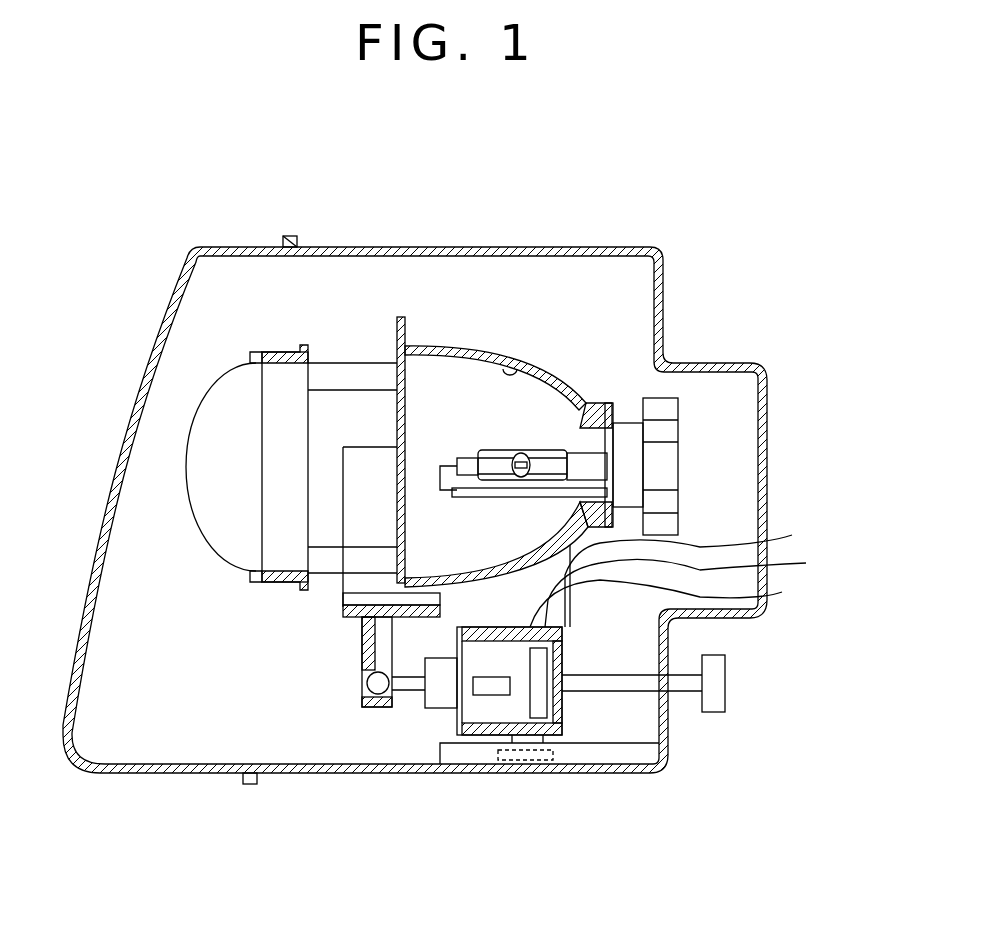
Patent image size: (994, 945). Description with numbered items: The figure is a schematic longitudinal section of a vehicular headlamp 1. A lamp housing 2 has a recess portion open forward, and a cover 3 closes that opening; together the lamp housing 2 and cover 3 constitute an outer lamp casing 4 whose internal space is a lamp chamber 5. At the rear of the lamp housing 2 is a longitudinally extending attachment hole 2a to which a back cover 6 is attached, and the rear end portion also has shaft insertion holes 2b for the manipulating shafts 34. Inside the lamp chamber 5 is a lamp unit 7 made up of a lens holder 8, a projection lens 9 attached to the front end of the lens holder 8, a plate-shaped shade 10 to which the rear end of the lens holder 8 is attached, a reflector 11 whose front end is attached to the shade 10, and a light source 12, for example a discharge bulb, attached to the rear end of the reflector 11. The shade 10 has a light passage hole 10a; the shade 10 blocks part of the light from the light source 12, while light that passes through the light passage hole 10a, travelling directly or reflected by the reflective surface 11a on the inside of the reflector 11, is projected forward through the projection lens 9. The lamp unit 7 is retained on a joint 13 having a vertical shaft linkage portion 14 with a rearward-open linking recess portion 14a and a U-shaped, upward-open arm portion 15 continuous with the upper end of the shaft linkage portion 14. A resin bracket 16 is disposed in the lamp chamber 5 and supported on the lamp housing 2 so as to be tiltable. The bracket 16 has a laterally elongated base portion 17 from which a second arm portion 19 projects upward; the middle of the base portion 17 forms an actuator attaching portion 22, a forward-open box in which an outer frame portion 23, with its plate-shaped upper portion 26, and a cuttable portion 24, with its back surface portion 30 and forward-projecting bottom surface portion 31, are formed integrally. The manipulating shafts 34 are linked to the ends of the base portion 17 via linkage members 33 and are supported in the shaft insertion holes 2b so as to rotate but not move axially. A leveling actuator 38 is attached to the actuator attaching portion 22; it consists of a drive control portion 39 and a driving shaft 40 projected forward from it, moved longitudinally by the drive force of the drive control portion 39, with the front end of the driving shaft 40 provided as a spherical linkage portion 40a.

The vehicular headlamp 1 is at (105, 246).
The lamp housing 2 is at (327, 247).
The attachment hole 2a is at (733, 365).
The shaft insertion hole 2b is at (668, 677).
The cover 3 is at (231, 247).
The outer lamp casing 4 is at (313, 168).
The lamp chamber 5 is at (160, 712).
The back cover 6 is at (770, 617).
The lamp unit 7 is at (465, 346).
The lens holder 8 is at (330, 363).
The projection lens 9 is at (203, 420).
The shade 10 is at (402, 320).
The light passage hole 10a is at (405, 402).
The reflector 11 is at (495, 366).
The reflective surface 11a is at (512, 366).
The light source 12 is at (497, 448).
The joint 13 is at (347, 516).
The shaft linkage portion 14 is at (350, 612).
The linking recess portion 14a is at (358, 645).
The arm portion 15 is at (320, 590).
The bracket 16 is at (765, 538).
The base portion 17 is at (640, 750).
The second arm portion 19 is at (671, 600).
The actuator attaching portion 22 is at (475, 717).
The outer frame portion 23 is at (694, 573).
The cuttable portion 24 is at (483, 742).
The upper portion 26 is at (689, 586).
The back surface portion 30 is at (563, 698).
The bottom surface portion 31 is at (500, 742).
The linkage member 33 is at (530, 746).
The manipulating shaft 34 is at (718, 670).
The leveling actuator 38 is at (437, 700).
The drive control portion 39 is at (477, 735).
The driving shaft 40 is at (410, 687).
The spherical linkage portion 40a is at (383, 692).